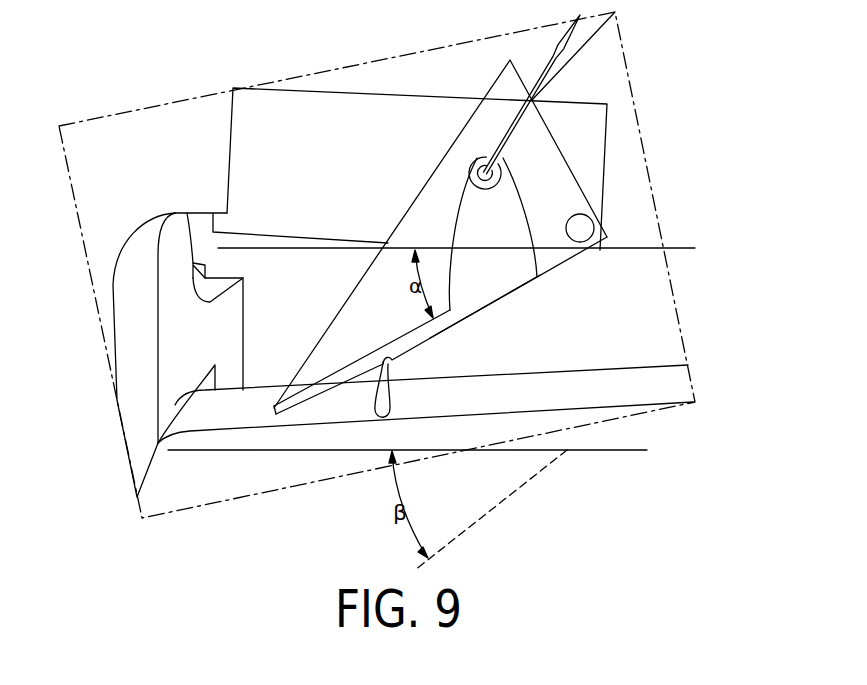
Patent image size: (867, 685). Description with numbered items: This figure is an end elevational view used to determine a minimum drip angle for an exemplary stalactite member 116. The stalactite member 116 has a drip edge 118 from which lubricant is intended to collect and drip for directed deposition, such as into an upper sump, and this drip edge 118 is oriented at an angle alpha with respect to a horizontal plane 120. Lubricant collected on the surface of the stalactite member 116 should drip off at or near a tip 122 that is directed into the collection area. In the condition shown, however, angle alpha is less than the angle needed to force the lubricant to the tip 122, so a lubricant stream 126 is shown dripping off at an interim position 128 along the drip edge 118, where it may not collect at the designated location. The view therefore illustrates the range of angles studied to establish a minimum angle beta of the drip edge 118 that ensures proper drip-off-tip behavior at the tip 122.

The stalactite member 116 is at (323, 357).
The drip edge 118 is at (307, 403).
The horizontal plane 120 is at (682, 250).
The tip 122 is at (288, 406).
The lubricant stream 126 is at (389, 393).
The interim position 128 is at (428, 341).